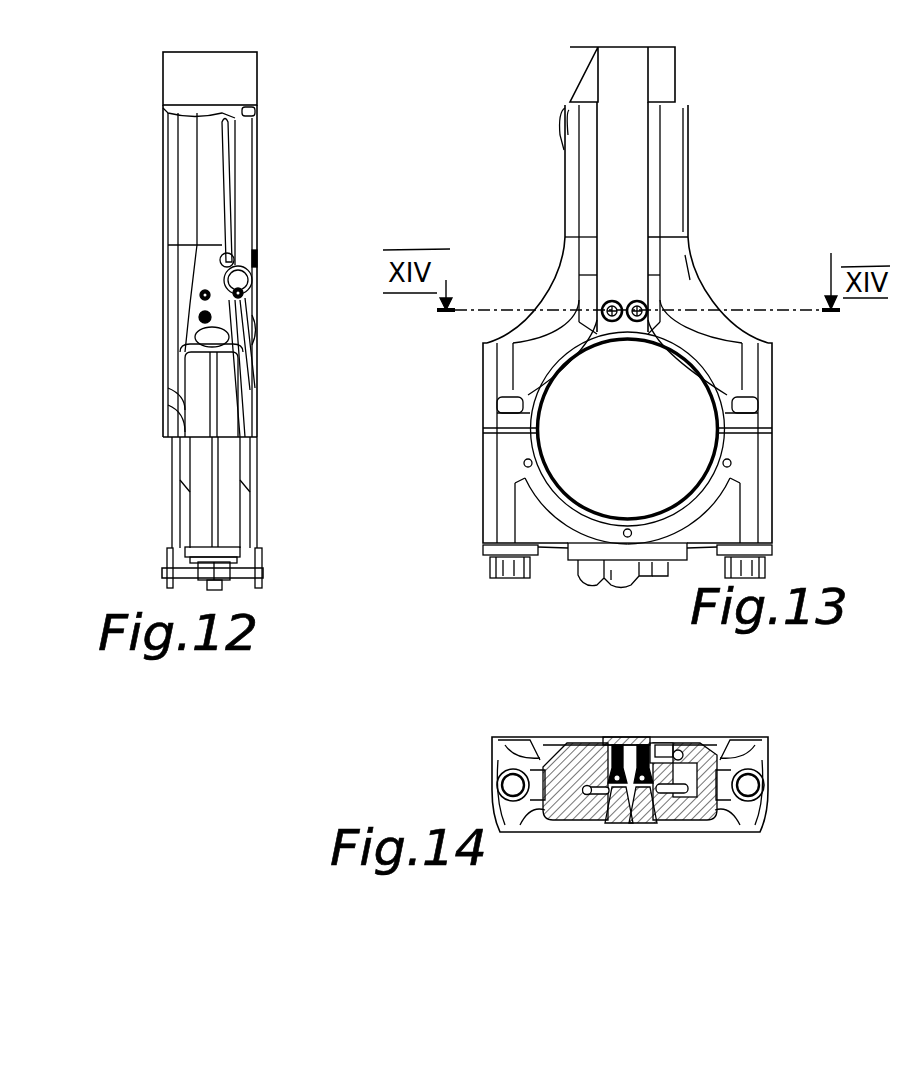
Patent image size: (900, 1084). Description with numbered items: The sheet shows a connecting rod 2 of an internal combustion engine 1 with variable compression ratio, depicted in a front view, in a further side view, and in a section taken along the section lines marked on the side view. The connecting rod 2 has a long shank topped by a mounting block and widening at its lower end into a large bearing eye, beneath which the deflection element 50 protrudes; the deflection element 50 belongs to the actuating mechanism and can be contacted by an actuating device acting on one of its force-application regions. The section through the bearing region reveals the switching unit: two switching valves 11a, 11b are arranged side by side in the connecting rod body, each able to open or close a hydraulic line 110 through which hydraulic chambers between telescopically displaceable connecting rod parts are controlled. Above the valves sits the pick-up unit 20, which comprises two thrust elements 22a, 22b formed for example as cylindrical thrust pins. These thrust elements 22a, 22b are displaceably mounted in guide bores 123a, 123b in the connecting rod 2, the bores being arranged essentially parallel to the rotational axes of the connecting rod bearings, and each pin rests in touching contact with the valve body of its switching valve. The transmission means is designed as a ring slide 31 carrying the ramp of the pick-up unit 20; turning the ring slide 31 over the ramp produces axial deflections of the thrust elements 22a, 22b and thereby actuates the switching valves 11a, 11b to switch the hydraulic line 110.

In FIG. 13, the internal combustion engine 1 is at (647, 298).
In FIG. 12, the connecting rod 2 is at (266, 198).
In FIG. 13, the connecting rod 2 is at (697, 187).
In FIG. 13, the deflection element 50 is at (604, 589).
In FIG. 14, the pick-up unit 20 is at (643, 736).
In FIG. 14, the thrust element 22a is at (660, 740).
In FIG. 14, the thrust element 22b is at (610, 767).
In FIG. 14, the ring slide 31 is at (665, 737).
In FIG. 14, the guide bore 123a is at (688, 740).
In FIG. 14, the guide bore 123b is at (612, 766).
In FIG. 14, the switching valve 11a is at (659, 796).
In FIG. 14, the switching valve 11b is at (603, 794).
In FIG. 14, the hydraulic line 110 is at (688, 795).